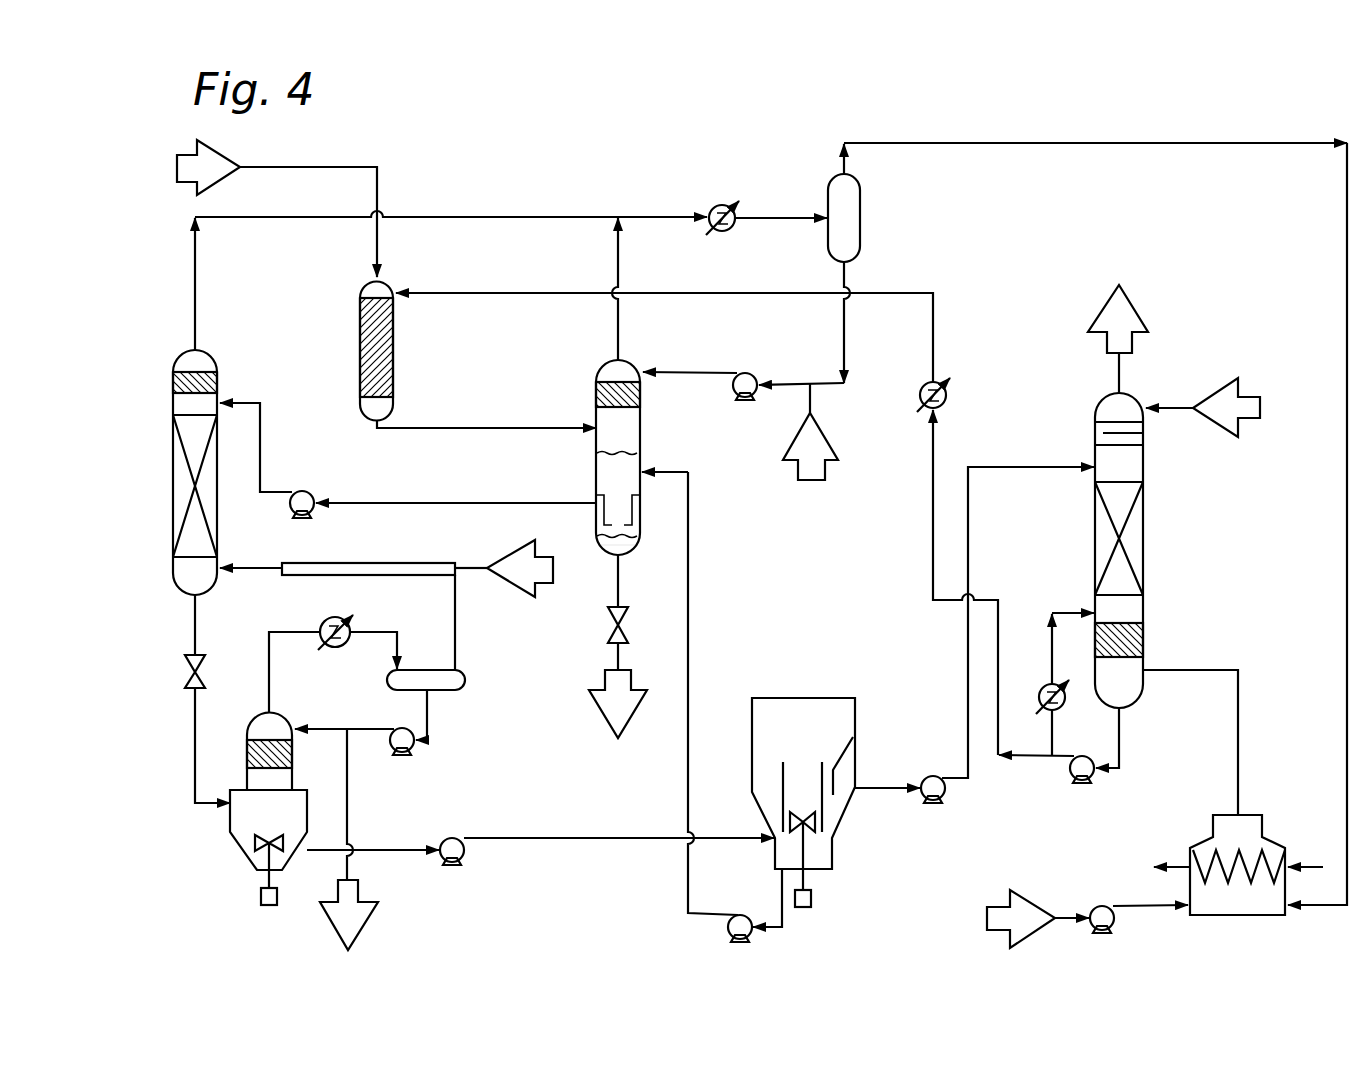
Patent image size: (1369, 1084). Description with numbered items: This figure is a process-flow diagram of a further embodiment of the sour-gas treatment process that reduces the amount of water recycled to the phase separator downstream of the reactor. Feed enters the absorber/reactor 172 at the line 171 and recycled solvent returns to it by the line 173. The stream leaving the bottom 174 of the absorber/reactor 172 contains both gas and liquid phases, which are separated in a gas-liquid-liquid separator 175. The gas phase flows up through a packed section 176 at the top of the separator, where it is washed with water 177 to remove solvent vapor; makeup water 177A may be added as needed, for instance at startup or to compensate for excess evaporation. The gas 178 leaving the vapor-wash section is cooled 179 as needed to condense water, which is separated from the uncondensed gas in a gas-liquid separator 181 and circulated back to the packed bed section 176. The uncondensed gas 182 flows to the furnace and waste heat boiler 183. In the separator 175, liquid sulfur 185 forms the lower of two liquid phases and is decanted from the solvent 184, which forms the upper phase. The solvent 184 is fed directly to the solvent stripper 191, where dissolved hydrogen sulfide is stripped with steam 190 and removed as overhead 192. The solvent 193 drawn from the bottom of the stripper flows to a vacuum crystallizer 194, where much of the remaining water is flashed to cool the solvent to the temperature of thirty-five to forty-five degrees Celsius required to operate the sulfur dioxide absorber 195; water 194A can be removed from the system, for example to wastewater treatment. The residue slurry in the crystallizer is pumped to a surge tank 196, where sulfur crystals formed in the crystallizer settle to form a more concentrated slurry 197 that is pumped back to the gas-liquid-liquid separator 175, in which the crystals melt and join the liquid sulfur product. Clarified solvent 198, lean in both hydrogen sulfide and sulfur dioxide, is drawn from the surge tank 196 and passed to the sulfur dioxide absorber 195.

The feed gas inlet 171 is at (186, 184).
The absorber/reactor 172 is at (358, 358).
The absorbent recycle line 173 is at (468, 292).
The bottom stream of the absorber/reactor 174 is at (446, 500).
The gas-liquid-liquid separator 175 is at (645, 430).
The packed section 176 is at (595, 395).
The wash water 177 is at (787, 382).
The makeup water 177A is at (815, 483).
The gas leaving the vapor-wash section 178 is at (622, 343).
The cooler 179 is at (713, 204).
The gas-liquid separator 181 is at (860, 230).
The uncondensed gas 182 is at (1168, 145).
The furnace and waste heat boiler 183 is at (1203, 838).
The solvent 184 is at (598, 498).
The liquid sulfur 185 is at (635, 543).
The steam 190 is at (542, 582).
The solvent stripper 191 is at (170, 487).
The overhead 192 is at (197, 338).
The stripped solvent 193 is at (190, 628).
The vacuum crystallizer 194 is at (248, 855).
The water 194A is at (372, 922).
The SO2 absorber 195 is at (1147, 543).
The surge tank 196 is at (793, 695).
The concentrated slurry 197 is at (768, 930).
The clarified solvent 198 is at (880, 785).